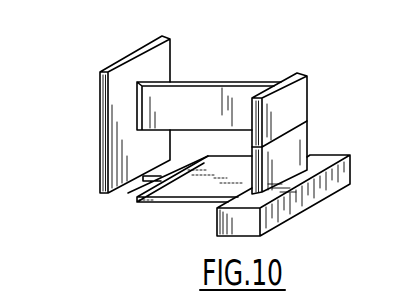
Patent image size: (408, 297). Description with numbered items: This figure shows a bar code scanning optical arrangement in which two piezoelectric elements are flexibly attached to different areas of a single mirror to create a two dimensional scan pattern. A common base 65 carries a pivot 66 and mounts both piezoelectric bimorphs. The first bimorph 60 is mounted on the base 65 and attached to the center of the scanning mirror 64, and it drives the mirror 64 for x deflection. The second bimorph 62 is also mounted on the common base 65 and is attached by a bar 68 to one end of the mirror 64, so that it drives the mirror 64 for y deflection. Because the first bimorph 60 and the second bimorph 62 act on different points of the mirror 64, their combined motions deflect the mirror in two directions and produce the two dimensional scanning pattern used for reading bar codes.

The first piezoelectric bimorph 60 is at (190, 82).
The second piezoelectric bimorph 62 is at (181, 203).
The scanning mirror 64 is at (102, 138).
The common base 65 is at (302, 146).
The pivot 66 is at (309, 121).
The bar 68 is at (130, 192).